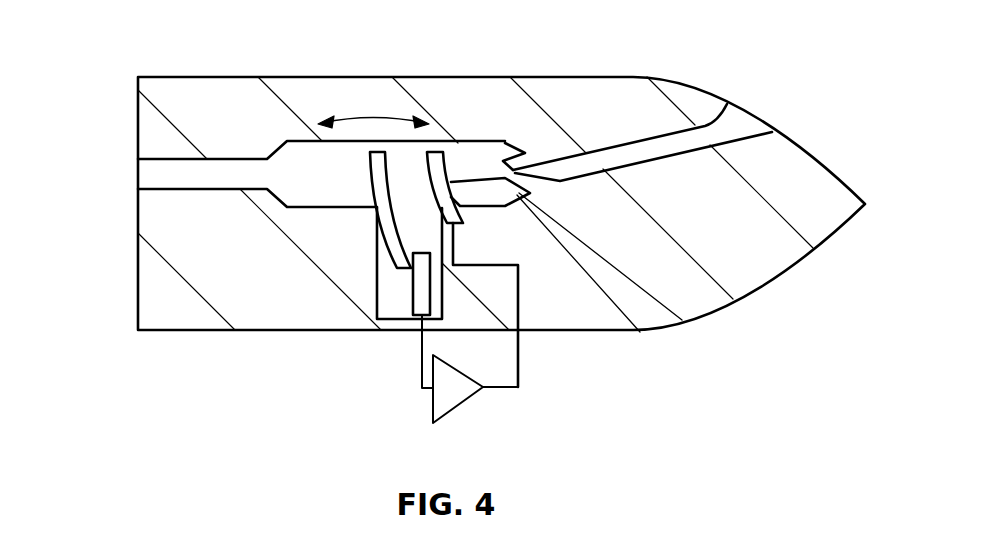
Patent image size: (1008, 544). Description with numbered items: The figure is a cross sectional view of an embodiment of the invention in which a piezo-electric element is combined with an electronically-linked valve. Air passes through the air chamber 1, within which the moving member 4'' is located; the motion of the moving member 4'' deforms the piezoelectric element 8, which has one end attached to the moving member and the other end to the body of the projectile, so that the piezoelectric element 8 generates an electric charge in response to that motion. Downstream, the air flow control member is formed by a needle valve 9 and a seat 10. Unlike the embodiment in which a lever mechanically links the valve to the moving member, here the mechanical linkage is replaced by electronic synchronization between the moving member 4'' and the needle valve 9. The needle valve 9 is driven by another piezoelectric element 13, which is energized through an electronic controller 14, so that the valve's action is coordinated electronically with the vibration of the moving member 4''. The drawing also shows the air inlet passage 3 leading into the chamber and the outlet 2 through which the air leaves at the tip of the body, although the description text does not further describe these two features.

The air chamber 1 is at (413, 158).
The outlet channel 2 is at (743, 120).
The supply channel 3 is at (150, 175).
The moving member 4'' is at (339, 266).
The piezoelectric element 8 is at (418, 292).
The needle valve 9 is at (515, 198).
The seat 10 is at (527, 160).
The piezoelectric element 13 is at (477, 212).
The electronic controller 14 is at (455, 397).